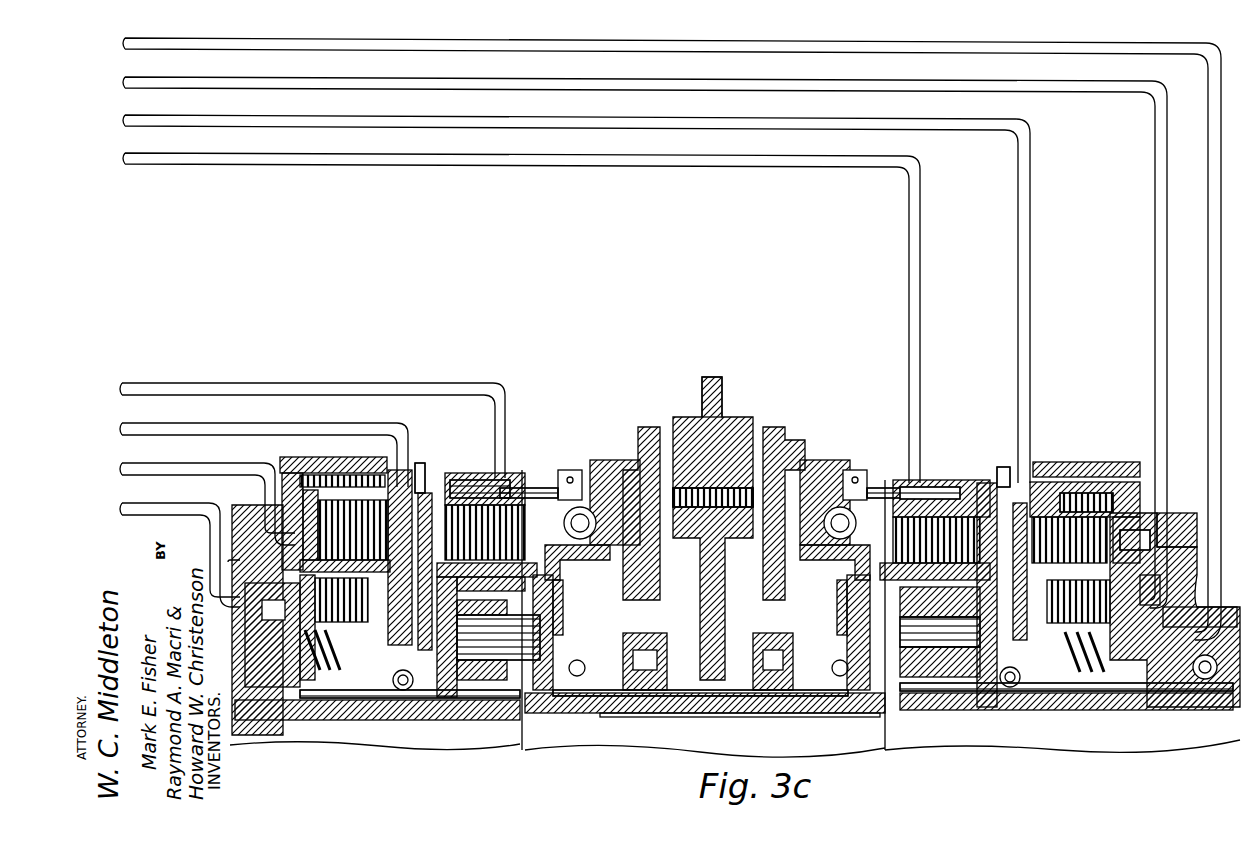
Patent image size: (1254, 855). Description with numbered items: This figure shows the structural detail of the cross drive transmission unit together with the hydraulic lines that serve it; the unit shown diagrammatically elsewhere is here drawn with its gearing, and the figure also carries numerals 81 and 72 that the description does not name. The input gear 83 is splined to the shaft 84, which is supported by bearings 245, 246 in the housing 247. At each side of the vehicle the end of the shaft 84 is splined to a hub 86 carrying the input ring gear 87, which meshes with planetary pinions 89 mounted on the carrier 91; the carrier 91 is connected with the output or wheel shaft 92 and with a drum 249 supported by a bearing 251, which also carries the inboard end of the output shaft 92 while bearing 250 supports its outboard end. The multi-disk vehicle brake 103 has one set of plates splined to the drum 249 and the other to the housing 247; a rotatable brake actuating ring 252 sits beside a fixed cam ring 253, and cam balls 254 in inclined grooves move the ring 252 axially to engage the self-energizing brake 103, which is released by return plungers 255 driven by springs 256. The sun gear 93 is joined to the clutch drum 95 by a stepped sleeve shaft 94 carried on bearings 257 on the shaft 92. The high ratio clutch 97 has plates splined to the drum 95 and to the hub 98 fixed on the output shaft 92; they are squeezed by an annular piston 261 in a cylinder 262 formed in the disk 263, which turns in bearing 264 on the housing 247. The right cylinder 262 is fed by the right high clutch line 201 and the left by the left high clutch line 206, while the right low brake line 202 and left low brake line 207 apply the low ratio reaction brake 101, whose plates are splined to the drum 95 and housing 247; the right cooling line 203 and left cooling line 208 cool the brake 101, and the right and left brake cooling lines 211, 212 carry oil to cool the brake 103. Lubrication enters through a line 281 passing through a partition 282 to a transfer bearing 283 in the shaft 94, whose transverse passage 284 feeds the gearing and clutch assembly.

The right high clutch line 201 is at (135, 40).
The right low brake line 202 is at (135, 80).
The right cooling line 203 is at (135, 118).
The right hand brake cooling line 211 is at (133, 156).
The left hand brake cooling line 212 is at (135, 385).
The left cooling line 208 is at (135, 425).
The left low brake line 207 is at (135, 465).
The left high clutch line 206 is at (132, 505).
The housing 247 is at (290, 460).
The cylinder 262 is at (285, 500).
The disk 263 is at (283, 540).
The annular piston 261 is at (305, 680).
The low ratio reaction brake 101 is at (325, 470).
The lubrication line 281 is at (420, 465).
The partition 282 is at (440, 480).
The multi-disk vehicle brake 103 is at (475, 490).
The transfer bearing 283 is at (365, 650).
The transverse passage 284 is at (410, 690).
The hub 98 is at (335, 665).
The high ratio clutch 97 is at (460, 600).
The stepped sleeve shaft 94 is at (445, 680).
The sun gear 93 is at (500, 650).
The output or wheel shaft 92 is at (455, 705).
The planetary pinions 89 is at (550, 695).
The gear 81 is at (722, 395).
The shaft 72 is at (702, 405).
The input gear 83 is at (720, 590).
The fixed cam ring 253 is at (605, 485).
The cam balls 254 is at (580, 507).
The bearing 264 is at (1205, 655).
The rotatable brake actuating ring 252 is at (560, 478).
The return plungers 255 is at (875, 495).
The springs 256 is at (925, 490).
The drum 249 is at (575, 550).
The hub 86 is at (555, 600).
The input ring gear 87 is at (560, 580).
The bearings 257 is at (577, 660).
The carrier 91 is at (569, 668).
The bearing 245 is at (660, 645).
The bearing 246 is at (750, 650).
The shaft 84 is at (640, 740).
The bearing 251 is at (825, 705).
The clutch element or drum 95 is at (1150, 580).
The bearing 250 is at (1205, 680).